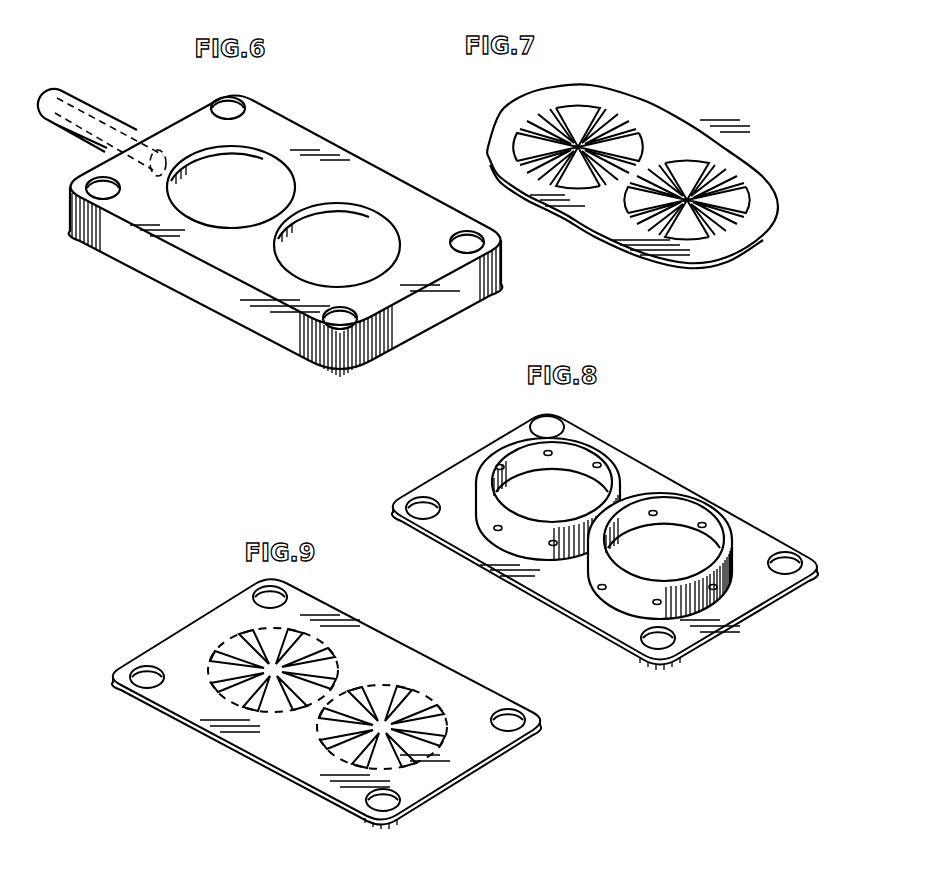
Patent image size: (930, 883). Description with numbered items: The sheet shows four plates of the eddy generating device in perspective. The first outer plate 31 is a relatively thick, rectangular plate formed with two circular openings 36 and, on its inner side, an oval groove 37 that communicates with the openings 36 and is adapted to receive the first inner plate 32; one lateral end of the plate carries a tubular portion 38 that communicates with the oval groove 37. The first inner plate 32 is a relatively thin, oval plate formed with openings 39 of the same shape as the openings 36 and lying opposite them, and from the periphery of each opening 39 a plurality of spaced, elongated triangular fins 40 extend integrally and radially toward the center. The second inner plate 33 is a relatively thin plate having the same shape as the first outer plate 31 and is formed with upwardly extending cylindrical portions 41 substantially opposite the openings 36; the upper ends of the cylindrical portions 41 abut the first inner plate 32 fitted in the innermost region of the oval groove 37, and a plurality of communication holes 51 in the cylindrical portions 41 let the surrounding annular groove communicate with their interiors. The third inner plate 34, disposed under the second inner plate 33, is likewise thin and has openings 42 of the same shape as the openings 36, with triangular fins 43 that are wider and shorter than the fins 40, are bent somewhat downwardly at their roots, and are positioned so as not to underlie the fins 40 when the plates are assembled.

In FIG. 6, the first outer plate 31 is at (293, 107).
In FIG. 6, the circular openings 36 is at (233, 210).
In FIG. 6, the oval groove 37 is at (157, 173).
In FIG. 6, the tubular portion 38 is at (112, 112).
In FIG. 7, the first inner plate 32 is at (655, 97).
In FIG. 7, the openings 39 is at (520, 140).
In FIG. 7, the elongated triangular fins 40 is at (602, 117).
In FIG. 8, the second inner plate 33 is at (653, 453).
In FIG. 8, the cylindrical portions 41 is at (607, 453).
In FIG. 8, the communication holes 51 is at (546, 451).
In FIG. 9, the third inner plate 34 is at (237, 760).
In FIG. 9, the openings 42 is at (250, 640).
In FIG. 9, the triangular fins 43 is at (328, 662).